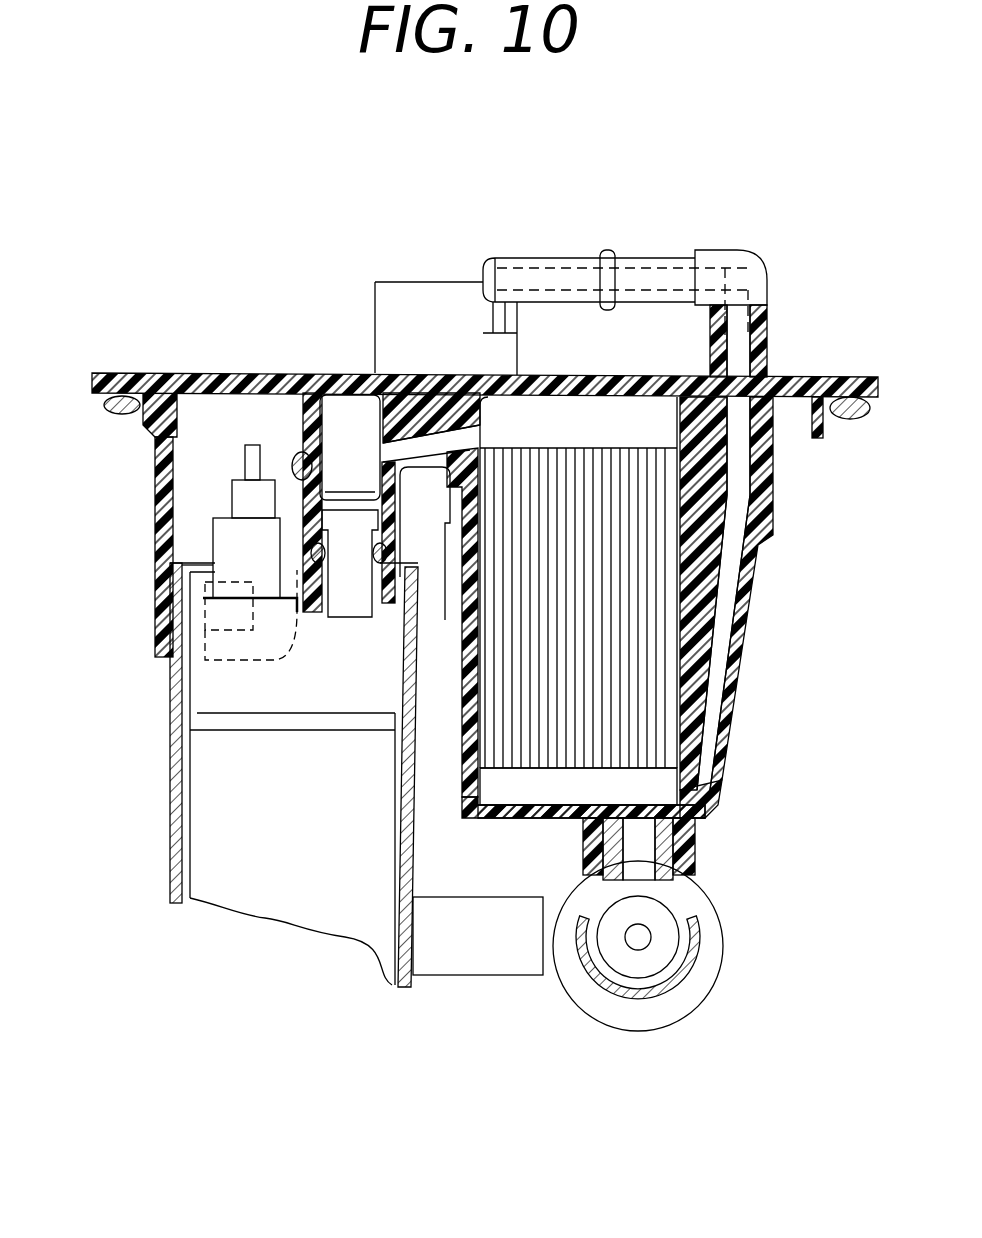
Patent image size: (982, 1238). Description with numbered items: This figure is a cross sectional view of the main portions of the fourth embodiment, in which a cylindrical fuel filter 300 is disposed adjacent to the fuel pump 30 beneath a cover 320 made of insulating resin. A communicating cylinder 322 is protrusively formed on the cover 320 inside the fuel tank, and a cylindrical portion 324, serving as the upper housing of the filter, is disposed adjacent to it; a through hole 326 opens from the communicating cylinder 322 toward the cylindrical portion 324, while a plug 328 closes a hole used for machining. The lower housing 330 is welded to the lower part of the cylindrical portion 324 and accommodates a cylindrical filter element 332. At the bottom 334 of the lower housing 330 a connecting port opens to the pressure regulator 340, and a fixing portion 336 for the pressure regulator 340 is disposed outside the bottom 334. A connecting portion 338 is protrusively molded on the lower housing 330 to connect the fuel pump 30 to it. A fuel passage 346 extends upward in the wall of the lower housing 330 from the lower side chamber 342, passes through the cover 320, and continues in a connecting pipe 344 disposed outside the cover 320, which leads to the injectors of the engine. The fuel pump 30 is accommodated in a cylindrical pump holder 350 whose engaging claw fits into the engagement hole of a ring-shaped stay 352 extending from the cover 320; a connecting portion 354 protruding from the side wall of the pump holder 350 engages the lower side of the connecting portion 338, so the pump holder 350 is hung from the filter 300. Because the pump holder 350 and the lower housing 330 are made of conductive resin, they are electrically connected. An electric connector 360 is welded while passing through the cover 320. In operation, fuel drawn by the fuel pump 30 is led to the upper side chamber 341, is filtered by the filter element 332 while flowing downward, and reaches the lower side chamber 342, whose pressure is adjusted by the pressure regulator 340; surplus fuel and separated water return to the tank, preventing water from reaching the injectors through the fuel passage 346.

The fuel pump 30 is at (228, 852).
The fuel filter 300 is at (624, 656).
The cover 320 is at (190, 373).
The communicating cylinder 322 is at (313, 543).
The cylindrical portion 324 is at (773, 457).
The through hole 326 is at (413, 445).
The plug 328 is at (292, 455).
The lower housing 330 is at (732, 633).
The filter element 332 is at (663, 547).
The bottom 334 is at (655, 798).
The fixing portion 336 is at (697, 828).
The connecting portion 338 is at (410, 855).
The pressure regulator 340 is at (728, 918).
The upper side chamber 341 is at (612, 420).
The lower side chamber 342 is at (705, 760).
The connecting pipe 344 is at (572, 258).
The fuel passage 346 is at (740, 362).
The pump holder 350 is at (168, 795).
The stay 352 is at (155, 485).
The connecting portion 354 is at (450, 957).
The electric connector 360 is at (398, 282).